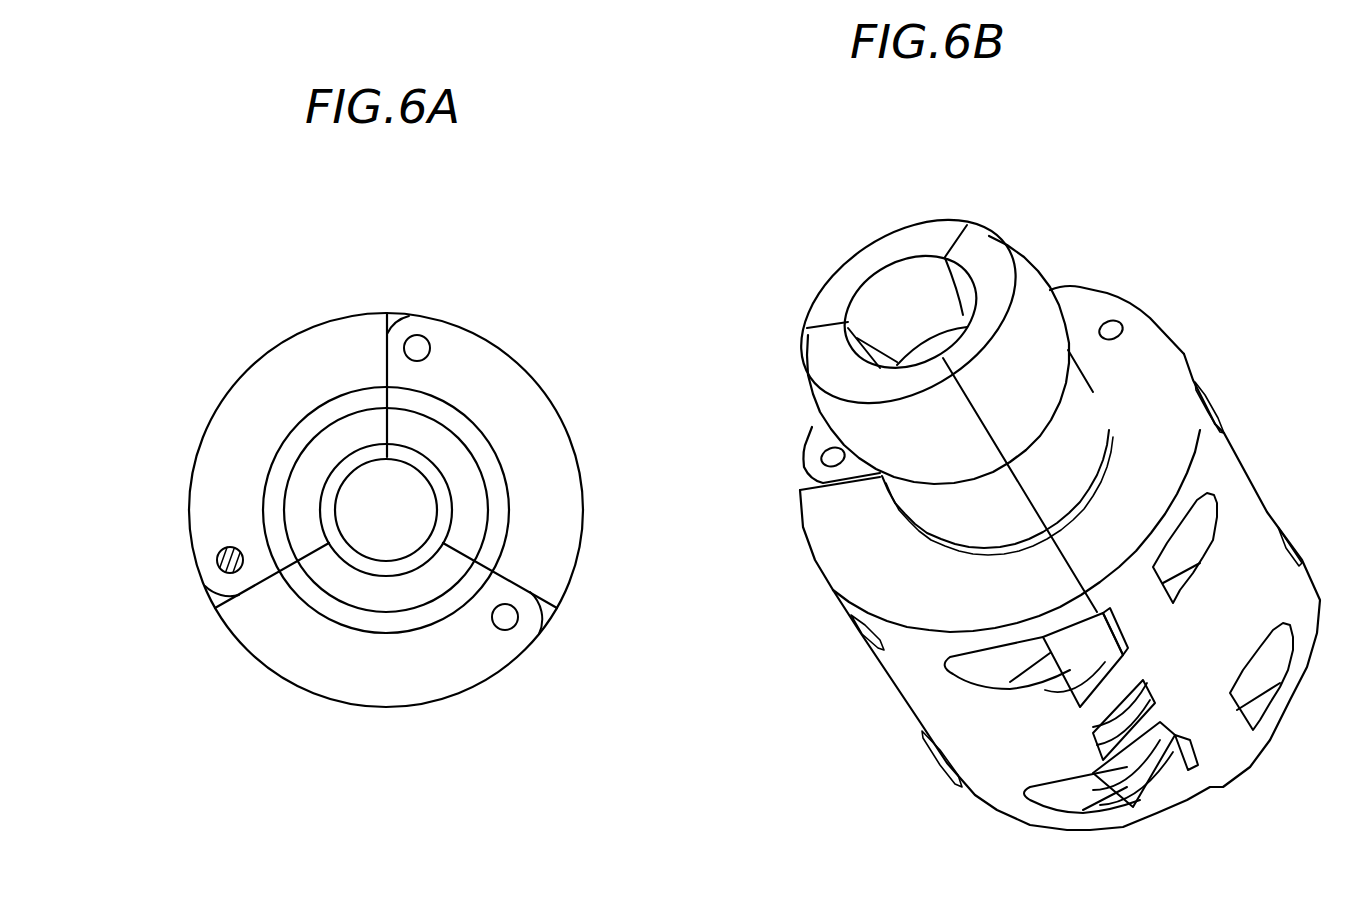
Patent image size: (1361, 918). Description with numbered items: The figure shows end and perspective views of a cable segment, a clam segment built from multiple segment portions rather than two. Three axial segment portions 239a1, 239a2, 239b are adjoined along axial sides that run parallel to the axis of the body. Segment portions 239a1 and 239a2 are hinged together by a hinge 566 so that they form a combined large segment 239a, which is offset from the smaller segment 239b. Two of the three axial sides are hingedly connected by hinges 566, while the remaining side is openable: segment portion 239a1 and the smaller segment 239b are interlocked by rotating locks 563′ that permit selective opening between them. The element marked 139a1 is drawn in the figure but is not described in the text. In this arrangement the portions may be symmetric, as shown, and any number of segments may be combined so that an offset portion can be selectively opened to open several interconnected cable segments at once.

In FIG. 6B, the combined large segment 239a is at (627, 266).
In FIG. 6A, the segment portion 239a1 is at (357, 683).
In FIG. 6B, the segment portion 239a1 is at (1001, 459).
In FIG. 6A, the segment portion 239a2 is at (215, 410).
In FIG. 6B, the segment portion 239a2 is at (900, 260).
In FIG. 6A, the smaller segment 239b is at (582, 486).
In FIG. 6B, the smaller segment 239b is at (1171, 416).
In FIG. 6B, the bore 139a1 is at (832, 362).
In FIG. 6A, the hinge 566 is at (419, 345).
In FIG. 6A, the rotating lock 563′ is at (508, 620).